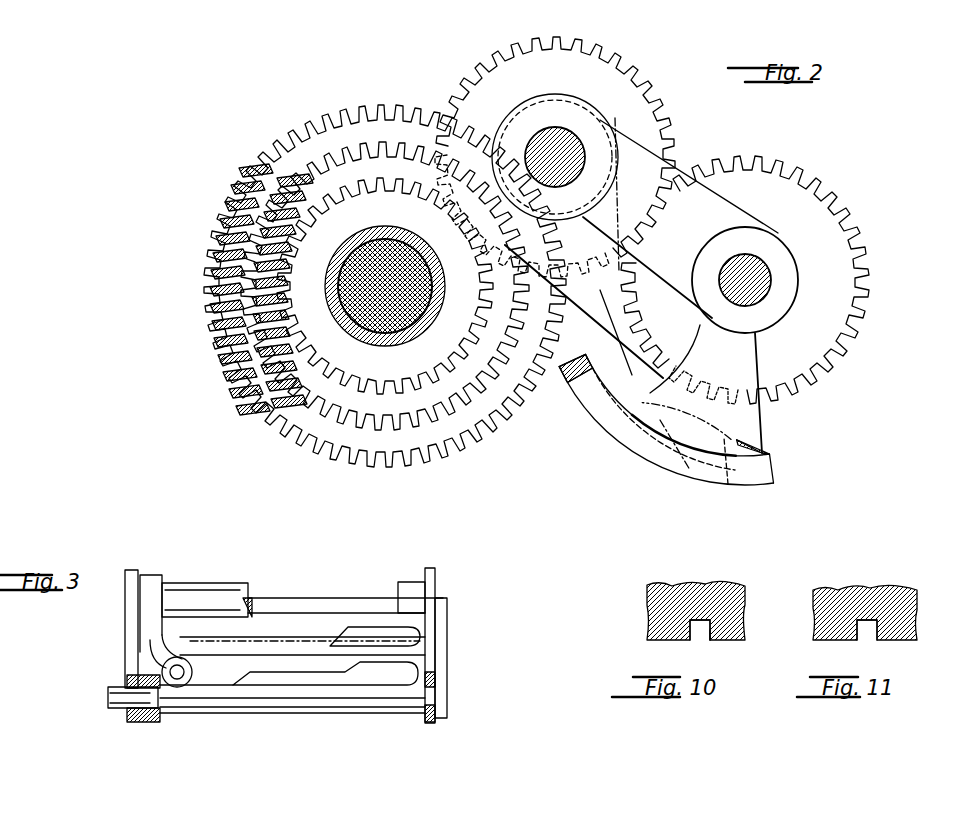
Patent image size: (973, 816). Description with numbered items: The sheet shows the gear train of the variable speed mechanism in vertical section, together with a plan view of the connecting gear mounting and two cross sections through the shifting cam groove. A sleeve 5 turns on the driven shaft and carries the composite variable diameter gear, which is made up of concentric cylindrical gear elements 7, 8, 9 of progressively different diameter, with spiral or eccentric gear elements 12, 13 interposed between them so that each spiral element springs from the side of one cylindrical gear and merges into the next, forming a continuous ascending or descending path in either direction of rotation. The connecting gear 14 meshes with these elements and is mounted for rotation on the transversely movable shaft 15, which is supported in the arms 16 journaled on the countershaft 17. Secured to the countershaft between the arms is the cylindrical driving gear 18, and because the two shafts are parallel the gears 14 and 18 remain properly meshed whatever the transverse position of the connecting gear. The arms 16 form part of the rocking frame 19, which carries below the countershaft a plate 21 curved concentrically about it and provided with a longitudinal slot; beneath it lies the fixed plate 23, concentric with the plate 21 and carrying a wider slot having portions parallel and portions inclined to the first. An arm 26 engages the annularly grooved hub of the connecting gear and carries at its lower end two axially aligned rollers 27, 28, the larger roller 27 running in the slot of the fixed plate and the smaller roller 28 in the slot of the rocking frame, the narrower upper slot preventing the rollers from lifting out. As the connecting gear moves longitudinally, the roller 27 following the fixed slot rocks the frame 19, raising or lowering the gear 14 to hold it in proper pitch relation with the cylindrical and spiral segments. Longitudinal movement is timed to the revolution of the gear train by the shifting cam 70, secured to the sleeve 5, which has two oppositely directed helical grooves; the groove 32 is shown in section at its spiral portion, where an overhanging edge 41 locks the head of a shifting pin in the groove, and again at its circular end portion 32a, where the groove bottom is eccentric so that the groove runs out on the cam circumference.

In FIG. 2, the sleeve 5 is at (470, 336).
In FIG. 2, the cylindrical gear element 7 is at (385, 286).
In FIG. 2, the cylindrical gear element 8 is at (385, 286).
In FIG. 2, the cylindrical gear element 9 is at (390, 112).
In FIG. 2, the spiral gear element 12 is at (262, 288).
In FIG. 2, the spiral gear element 13 is at (250, 238).
In FIG. 2, the connecting gear 14 is at (620, 68).
In FIG. 2, the transversely movable shaft 15 is at (556, 146).
In FIG. 3, the transversely movable shaft 15 is at (228, 588).
In FIG. 2, the arms 16 is at (645, 213).
In FIG. 3, the arms 16 is at (125, 636).
In FIG. 2, the countershaft 17 is at (748, 275).
In FIG. 3, the countershaft 17 is at (112, 708).
In FIG. 2, the cylindrical gear 18 is at (818, 182).
In FIG. 2, the rocking frame 19 is at (706, 389).
In FIG. 2, the plate 21 is at (762, 446).
In FIG. 3, the plate 21 is at (394, 695).
In FIG. 2, the fixed plate 23 is at (602, 413).
In FIG. 3, the fixed plate 23 is at (374, 618).
In FIG. 2, the arm 26 is at (597, 298).
In FIG. 3, the arm 26 is at (172, 648).
In FIG. 2, the roller 27 is at (717, 466).
In FIG. 2, the roller 28 is at (682, 438).
In FIG. 10, the helical groove 32 is at (695, 632).
In FIG. 11, the straight portion 32a is at (866, 632).
In FIG. 10, the overhanging edge 41 is at (712, 640).
In FIG. 10, the shifting cam 70 is at (715, 590).
In FIG. 11, the shifting cam 70 is at (878, 588).